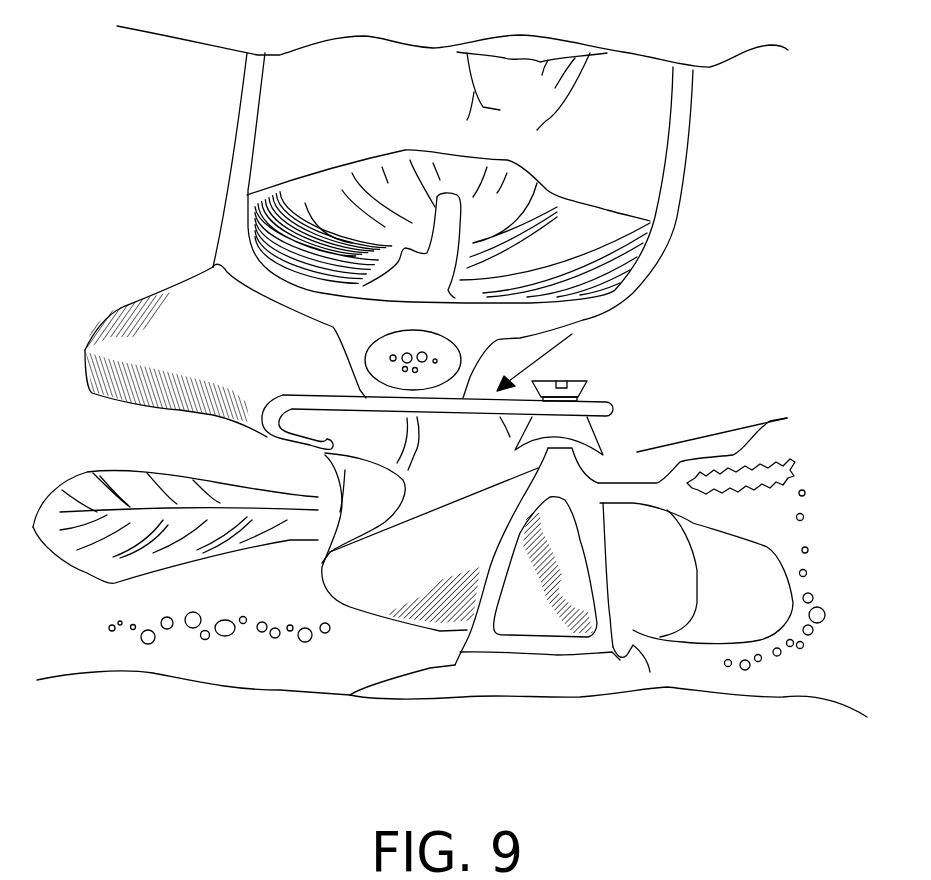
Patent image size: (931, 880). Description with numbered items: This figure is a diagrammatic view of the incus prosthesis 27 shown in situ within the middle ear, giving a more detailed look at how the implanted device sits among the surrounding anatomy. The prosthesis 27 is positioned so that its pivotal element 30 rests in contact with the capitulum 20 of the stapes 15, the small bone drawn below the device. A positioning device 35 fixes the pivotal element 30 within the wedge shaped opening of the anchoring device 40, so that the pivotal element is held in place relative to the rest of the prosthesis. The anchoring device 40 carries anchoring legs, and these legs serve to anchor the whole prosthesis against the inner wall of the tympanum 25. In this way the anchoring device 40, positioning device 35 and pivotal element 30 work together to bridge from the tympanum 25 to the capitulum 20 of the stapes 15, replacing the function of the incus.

The stapes 15 is at (608, 590).
The capitulum 20 is at (547, 448).
The tympanum 25 is at (272, 435).
The incus prosthesis 27 is at (540, 340).
The pivotal element 30 is at (608, 438).
The positioning device 35 is at (577, 380).
The anchoring device 40 is at (327, 398).